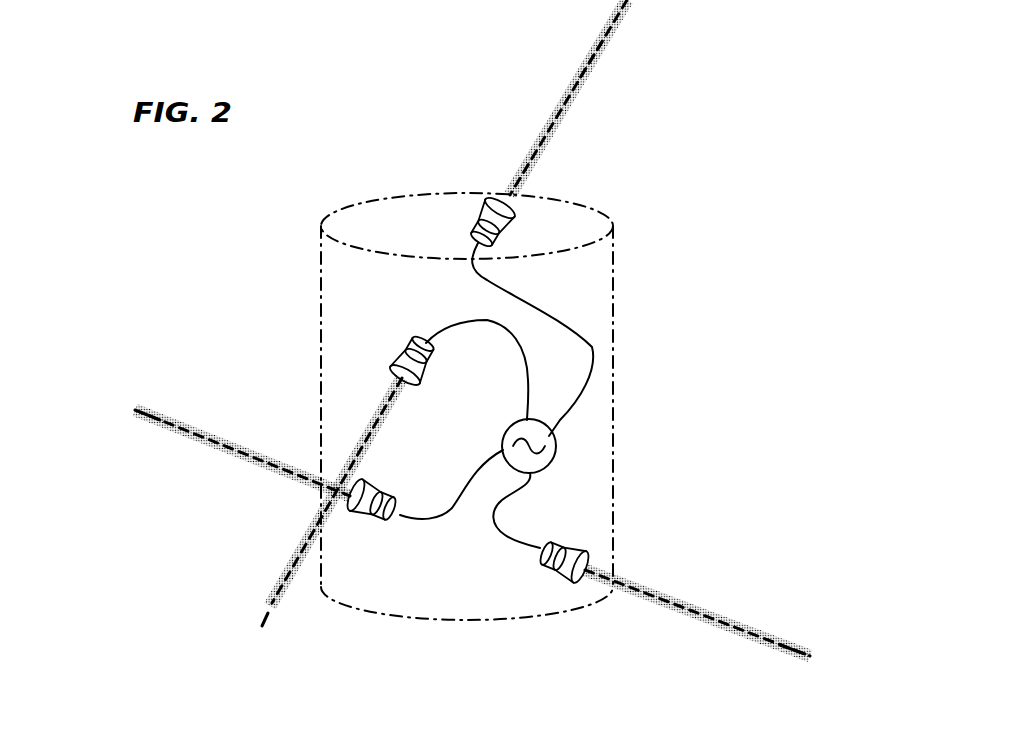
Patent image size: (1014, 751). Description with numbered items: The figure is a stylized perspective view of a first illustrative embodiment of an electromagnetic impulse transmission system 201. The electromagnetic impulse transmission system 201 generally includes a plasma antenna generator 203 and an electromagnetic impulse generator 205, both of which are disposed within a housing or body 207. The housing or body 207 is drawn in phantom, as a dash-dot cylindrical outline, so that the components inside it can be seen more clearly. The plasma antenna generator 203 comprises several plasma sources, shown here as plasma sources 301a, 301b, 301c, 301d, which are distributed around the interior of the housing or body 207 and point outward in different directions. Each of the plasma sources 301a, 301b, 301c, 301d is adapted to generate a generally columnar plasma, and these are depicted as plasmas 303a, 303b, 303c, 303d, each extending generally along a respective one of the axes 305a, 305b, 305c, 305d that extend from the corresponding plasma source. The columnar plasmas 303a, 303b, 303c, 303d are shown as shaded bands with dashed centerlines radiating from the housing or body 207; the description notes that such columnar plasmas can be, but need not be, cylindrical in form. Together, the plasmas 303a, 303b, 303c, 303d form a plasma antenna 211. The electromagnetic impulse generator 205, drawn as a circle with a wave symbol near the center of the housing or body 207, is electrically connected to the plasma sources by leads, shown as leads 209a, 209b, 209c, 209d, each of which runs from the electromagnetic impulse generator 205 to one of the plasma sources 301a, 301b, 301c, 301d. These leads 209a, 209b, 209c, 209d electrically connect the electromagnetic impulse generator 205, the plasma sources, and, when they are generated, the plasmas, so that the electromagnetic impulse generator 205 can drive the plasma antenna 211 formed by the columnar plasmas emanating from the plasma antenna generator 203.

The electromagnetic impulse transmission system 201 is at (742, 140).
The plasma antenna generator 203 is at (460, 226).
The electromagnetic impulse generator 205 is at (558, 445).
The housing or body 207 is at (616, 282).
The lead 209a is at (590, 336).
The lead 209b is at (476, 319).
The lead 209c is at (433, 512).
The lead 209d is at (505, 540).
The plasma antenna 211 is at (200, 455).
The plasma source 301a is at (483, 200).
The plasma source 301b is at (400, 363).
The plasma source 301c is at (373, 504).
The plasma source 301d is at (572, 560).
The columnar plasma 303a is at (603, 69).
The columnar plasma 303b is at (307, 525).
The columnar plasma 303c is at (203, 428).
The columnar plasma 303d is at (704, 612).
The axis 305a is at (567, 97).
The axis 305b is at (263, 622).
The axis 305c is at (160, 423).
The axis 305d is at (773, 643).